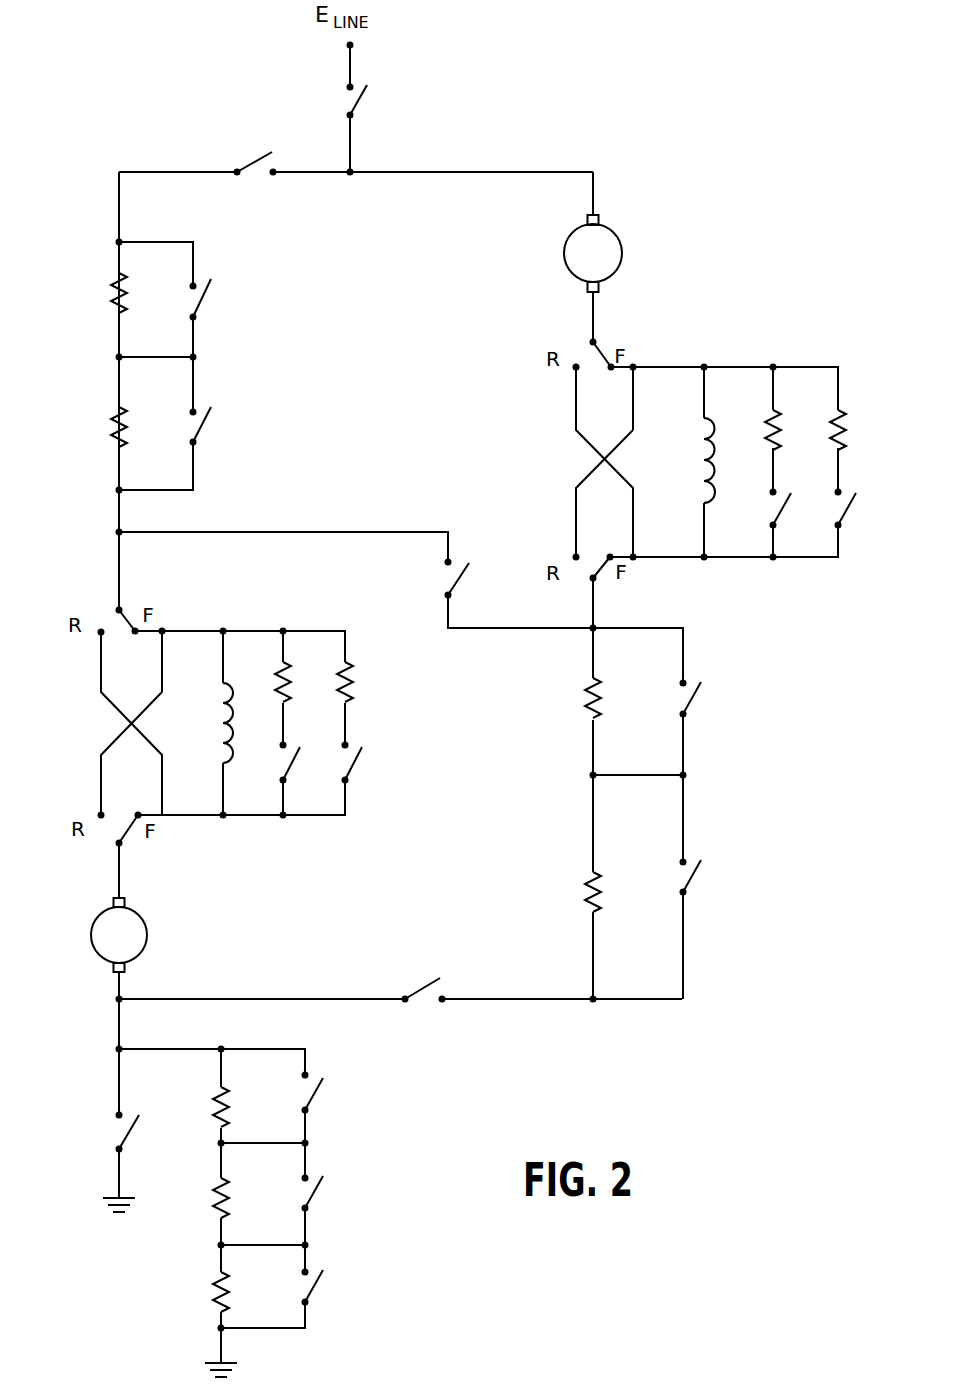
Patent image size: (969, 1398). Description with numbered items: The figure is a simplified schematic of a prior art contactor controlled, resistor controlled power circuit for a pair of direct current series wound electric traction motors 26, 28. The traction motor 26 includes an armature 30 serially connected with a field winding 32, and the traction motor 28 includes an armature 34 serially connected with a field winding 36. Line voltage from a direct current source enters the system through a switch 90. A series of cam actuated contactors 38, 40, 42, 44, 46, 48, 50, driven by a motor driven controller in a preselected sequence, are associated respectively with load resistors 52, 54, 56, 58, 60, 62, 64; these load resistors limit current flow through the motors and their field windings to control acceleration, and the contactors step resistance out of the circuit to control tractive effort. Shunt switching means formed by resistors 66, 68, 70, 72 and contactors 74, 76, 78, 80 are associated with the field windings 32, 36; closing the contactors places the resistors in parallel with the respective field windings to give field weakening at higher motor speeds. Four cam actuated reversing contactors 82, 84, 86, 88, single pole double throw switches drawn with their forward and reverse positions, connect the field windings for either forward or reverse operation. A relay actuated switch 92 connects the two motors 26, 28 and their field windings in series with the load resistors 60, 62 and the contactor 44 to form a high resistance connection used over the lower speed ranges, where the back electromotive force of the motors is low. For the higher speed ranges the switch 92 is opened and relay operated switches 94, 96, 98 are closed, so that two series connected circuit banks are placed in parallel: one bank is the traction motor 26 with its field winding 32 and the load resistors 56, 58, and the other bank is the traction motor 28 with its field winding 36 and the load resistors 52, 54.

The traction motor 26 is at (664, 302).
The traction motor 28 is at (40, 950).
The armature 30 is at (621, 257).
The field winding 32 is at (700, 460).
The armature 34 is at (147, 926).
The field winding 36 is at (228, 728).
The contactor 38 is at (215, 292).
The contactor 40 is at (214, 426).
The contactor 42 is at (696, 700).
The contactor 44 is at (694, 877).
The contactor 46 is at (318, 1088).
The contactor 48 is at (314, 1187).
The contactor 50 is at (318, 1279).
The load resistor 52 is at (111, 292).
The load resistor 54 is at (109, 427).
The load resistor 56 is at (577, 702).
The load resistor 58 is at (582, 895).
The load resistor 60 is at (210, 1102).
The load resistor 62 is at (210, 1200).
The load resistor 64 is at (213, 1297).
The resistor 66 is at (276, 671).
The resistor 68 is at (339, 671).
The resistor 70 is at (760, 417).
The resistor 72 is at (830, 418).
The contactor 74 is at (293, 763).
The contactor 76 is at (357, 763).
The contactor 78 is at (781, 510).
The contactor 80 is at (846, 510).
The reversing contactor 82 is at (585, 346).
The reversing contactor 84 is at (589, 569).
The reversing contactor 86 is at (112, 611).
The reversing contactor 88 is at (113, 831).
The switch 90 is at (372, 100).
The relay actuated switch 92 is at (462, 571).
The relay operated switch 94 is at (257, 160).
The relay operated switch 96 is at (422, 987).
The relay operated switch 98 is at (113, 1132).